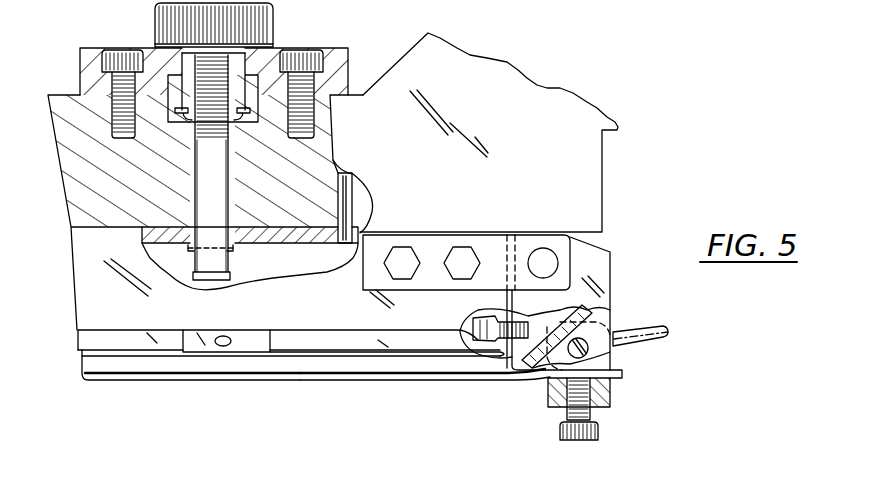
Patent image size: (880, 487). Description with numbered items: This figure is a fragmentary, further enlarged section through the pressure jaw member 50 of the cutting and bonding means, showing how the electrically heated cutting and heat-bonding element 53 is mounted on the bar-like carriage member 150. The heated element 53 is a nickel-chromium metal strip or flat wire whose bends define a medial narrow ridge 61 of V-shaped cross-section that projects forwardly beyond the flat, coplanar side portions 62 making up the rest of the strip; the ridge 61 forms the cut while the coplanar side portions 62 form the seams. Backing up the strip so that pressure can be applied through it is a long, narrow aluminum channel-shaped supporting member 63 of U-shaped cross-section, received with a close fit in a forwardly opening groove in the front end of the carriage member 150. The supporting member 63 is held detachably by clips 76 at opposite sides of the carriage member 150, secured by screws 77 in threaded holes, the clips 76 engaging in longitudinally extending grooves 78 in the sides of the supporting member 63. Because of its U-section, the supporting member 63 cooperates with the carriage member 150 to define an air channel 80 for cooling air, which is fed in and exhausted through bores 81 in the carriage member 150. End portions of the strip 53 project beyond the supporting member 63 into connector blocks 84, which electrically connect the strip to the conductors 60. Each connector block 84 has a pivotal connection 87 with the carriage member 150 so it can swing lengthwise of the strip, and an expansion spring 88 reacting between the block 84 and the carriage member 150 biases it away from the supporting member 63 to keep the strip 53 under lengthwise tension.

The pressure jaw member 50 is at (102, 313).
The electrically heated cutting and heat-bonding element 53 is at (201, 382).
The conductors 60 is at (662, 325).
The medial narrow ridge 61 is at (150, 381).
The coplanar side portions 62 is at (115, 376).
The channel-shaped supporting member 63 is at (356, 374).
The clips 76 is at (188, 340).
The screws 77 is at (226, 348).
The longitudinally extending grooves 78 is at (314, 356).
The air channel 80 is at (293, 269).
The bores 81 is at (348, 194).
The connector blocks 84 is at (613, 361).
The pivotal connection 87 is at (550, 263).
The expansion spring 88 is at (475, 323).
The bar-like carriage member 150 is at (494, 114).